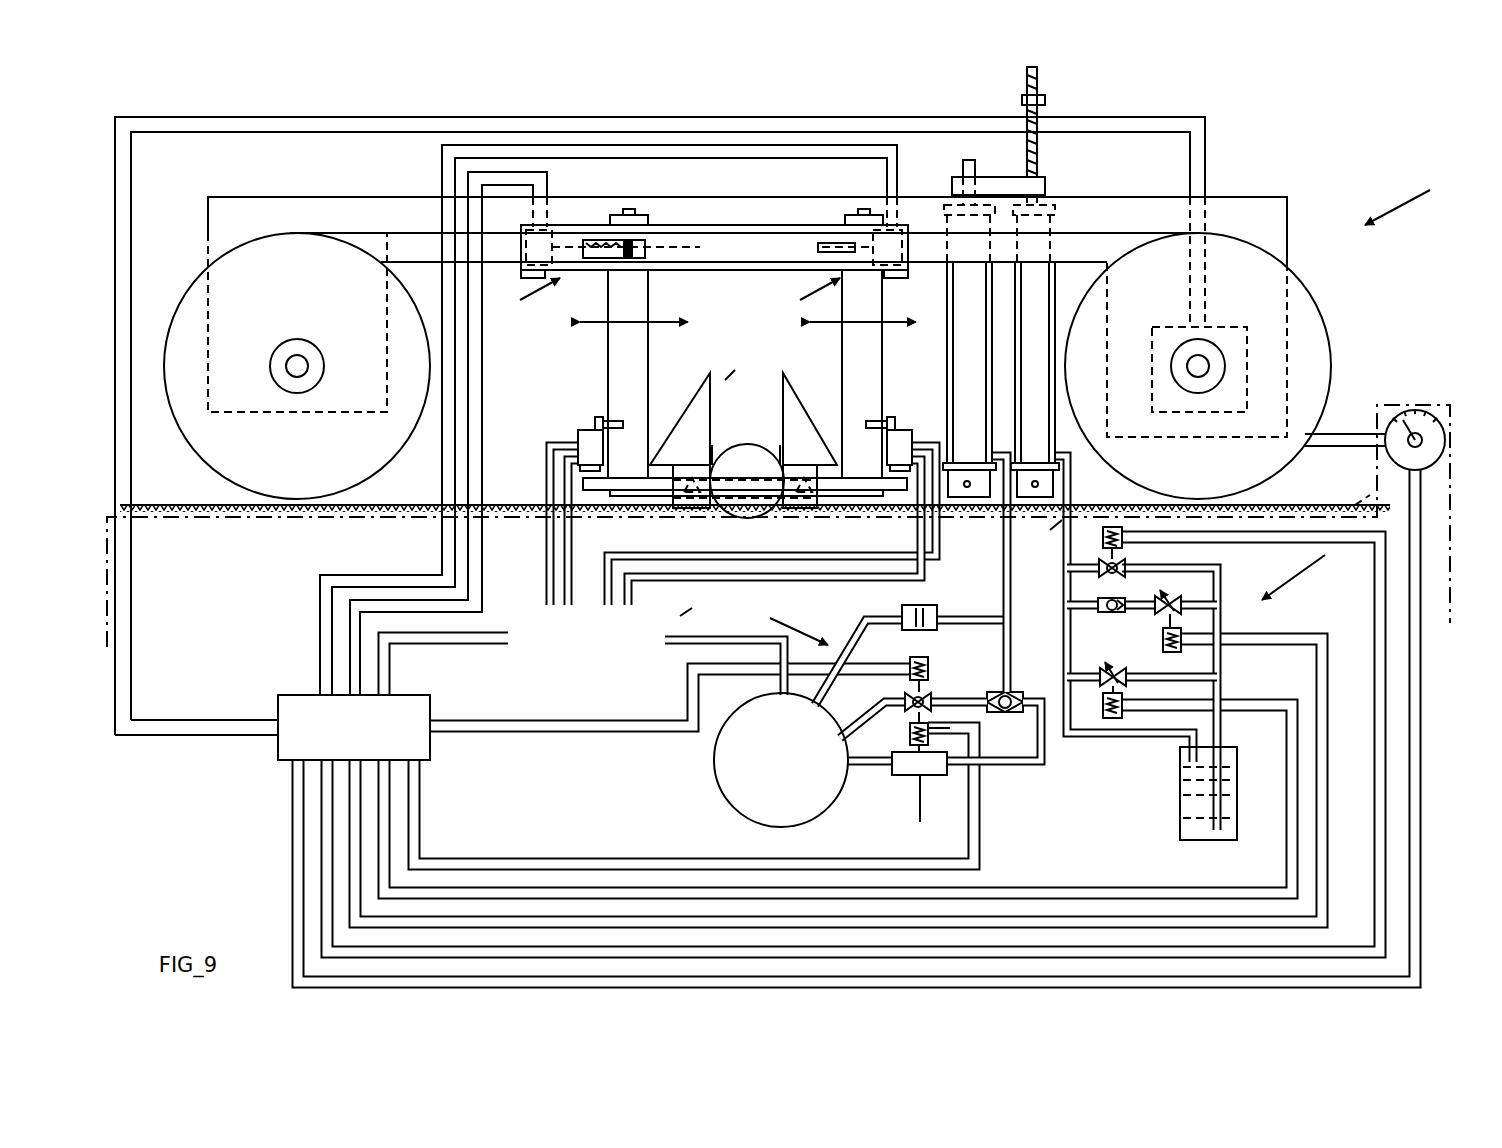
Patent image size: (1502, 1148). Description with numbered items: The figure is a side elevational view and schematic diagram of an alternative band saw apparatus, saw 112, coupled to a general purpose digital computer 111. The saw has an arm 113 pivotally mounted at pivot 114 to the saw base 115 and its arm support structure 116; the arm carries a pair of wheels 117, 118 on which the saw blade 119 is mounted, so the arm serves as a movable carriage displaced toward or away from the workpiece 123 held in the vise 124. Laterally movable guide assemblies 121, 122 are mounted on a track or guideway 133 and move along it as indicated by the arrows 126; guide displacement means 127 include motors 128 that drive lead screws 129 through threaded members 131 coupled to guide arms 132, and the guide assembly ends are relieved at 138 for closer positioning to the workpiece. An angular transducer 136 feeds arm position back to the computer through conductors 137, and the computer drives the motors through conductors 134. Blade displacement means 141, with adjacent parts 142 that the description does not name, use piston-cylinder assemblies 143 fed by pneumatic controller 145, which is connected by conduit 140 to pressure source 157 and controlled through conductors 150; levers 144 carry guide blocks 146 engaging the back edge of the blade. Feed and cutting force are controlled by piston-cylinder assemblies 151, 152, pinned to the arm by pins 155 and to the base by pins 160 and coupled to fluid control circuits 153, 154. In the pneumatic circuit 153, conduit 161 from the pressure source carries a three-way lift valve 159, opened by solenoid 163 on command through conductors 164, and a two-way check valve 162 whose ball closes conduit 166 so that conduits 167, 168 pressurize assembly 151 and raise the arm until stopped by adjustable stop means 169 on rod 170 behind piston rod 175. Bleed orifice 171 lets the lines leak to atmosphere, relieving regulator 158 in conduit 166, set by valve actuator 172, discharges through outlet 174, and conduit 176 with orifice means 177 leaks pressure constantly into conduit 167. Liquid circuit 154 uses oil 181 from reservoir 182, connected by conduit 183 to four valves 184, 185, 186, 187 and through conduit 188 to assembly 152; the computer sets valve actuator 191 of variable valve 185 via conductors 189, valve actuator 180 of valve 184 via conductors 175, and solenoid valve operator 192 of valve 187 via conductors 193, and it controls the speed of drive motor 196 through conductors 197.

The computer 111 is at (432, 750).
The saw 112 is at (1411, 201).
The arm 113 is at (255, 197).
The pivot 114 is at (1438, 420).
The saw base 115 is at (185, 515).
The arm support structure 116 is at (1343, 498).
The wheel 117 is at (195, 285).
The wheel 118 is at (1300, 282).
The saw blade 119 is at (370, 230).
The guide assembly 121 is at (690, 518).
The guide assembly 122 is at (830, 518).
The workpiece 123 is at (732, 481).
The vise 124 is at (746, 365).
The arrows 126 is at (590, 330).
The guide displacement means 127 is at (661, 298).
The motors 128 is at (552, 230).
The lead screws 129 is at (612, 215).
The threaded members 131 is at (655, 240).
The guide arms 132 is at (608, 360).
The guideway 133 is at (735, 272).
The conductors 134 is at (482, 195).
The angular transducer 136 is at (1418, 410).
The conductors 137 is at (292, 780).
The relieved ends 138 is at (716, 445).
The conduit 140 is at (668, 632).
The blade displacement means 141 is at (585, 423).
The jaw cylinder 142 is at (580, 445).
The piston-cylinder assemblies 143 is at (547, 548).
The levers 144 is at (660, 440).
The pneumatic controller 145 is at (695, 600).
The guide blocks 146 is at (710, 512).
The conductors 150 is at (462, 645).
The piston-cylinder assembly 151 is at (950, 330).
The piston-cylinder assembly 152 is at (1040, 296).
The fluid control circuit 153 is at (784, 626).
The fluid control circuit 154 is at (1316, 574).
The pins 155 is at (1032, 185).
The pressure source 157 is at (722, 800).
The relieving regulator 158 is at (895, 776).
The three-way lift valve 159 is at (930, 688).
The pins 160 is at (970, 488).
The conduit 161 is at (880, 700).
The two-way check valve 162 is at (960, 735).
The solenoid 163 is at (908, 660).
The conductors 164 is at (575, 722).
The conduit 166 is at (995, 768).
The conduit 167 is at (1012, 590).
The conduit 168 is at (1062, 625).
The adjustable stop means 169 is at (1040, 90).
The rod 170 is at (1047, 112).
The bleed orifice 171 is at (420, 818).
The valve actuator 172 is at (935, 728).
The outlet 174 is at (918, 800).
The piston rod 175 is at (348, 846).
The conduit 176 is at (870, 616).
The orifice means 177 is at (935, 608).
The valve actuator 180 is at (1163, 640).
The oil 181 is at (1237, 792).
The fluid reservoir 182 is at (1237, 752).
The conduit 183 is at (1222, 688).
The valve 184 is at (1172, 602).
The variable valve 185 is at (1110, 672).
The check valve 186 is at (1112, 612).
The valve 187 is at (1112, 575).
The conduit 188 is at (1060, 550).
The conductors 189 is at (392, 850).
The valve actuator 191 is at (1103, 708).
The solenoid valve operator 192 is at (1122, 545).
The electrical conductors 193 is at (320, 812).
The drive motor 196 is at (1232, 327).
The conductors 197 is at (208, 132).